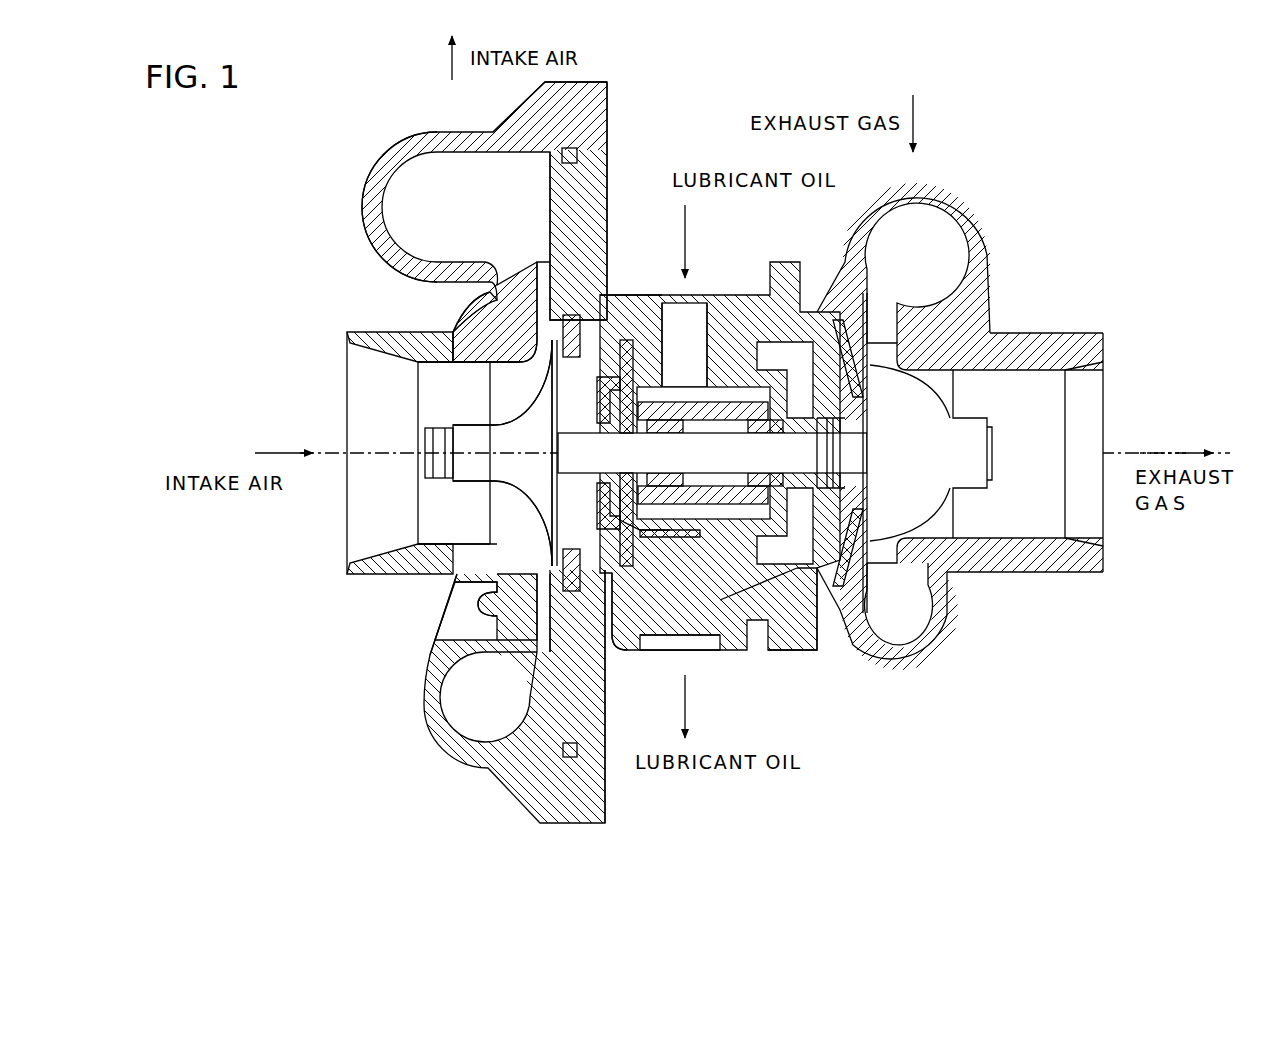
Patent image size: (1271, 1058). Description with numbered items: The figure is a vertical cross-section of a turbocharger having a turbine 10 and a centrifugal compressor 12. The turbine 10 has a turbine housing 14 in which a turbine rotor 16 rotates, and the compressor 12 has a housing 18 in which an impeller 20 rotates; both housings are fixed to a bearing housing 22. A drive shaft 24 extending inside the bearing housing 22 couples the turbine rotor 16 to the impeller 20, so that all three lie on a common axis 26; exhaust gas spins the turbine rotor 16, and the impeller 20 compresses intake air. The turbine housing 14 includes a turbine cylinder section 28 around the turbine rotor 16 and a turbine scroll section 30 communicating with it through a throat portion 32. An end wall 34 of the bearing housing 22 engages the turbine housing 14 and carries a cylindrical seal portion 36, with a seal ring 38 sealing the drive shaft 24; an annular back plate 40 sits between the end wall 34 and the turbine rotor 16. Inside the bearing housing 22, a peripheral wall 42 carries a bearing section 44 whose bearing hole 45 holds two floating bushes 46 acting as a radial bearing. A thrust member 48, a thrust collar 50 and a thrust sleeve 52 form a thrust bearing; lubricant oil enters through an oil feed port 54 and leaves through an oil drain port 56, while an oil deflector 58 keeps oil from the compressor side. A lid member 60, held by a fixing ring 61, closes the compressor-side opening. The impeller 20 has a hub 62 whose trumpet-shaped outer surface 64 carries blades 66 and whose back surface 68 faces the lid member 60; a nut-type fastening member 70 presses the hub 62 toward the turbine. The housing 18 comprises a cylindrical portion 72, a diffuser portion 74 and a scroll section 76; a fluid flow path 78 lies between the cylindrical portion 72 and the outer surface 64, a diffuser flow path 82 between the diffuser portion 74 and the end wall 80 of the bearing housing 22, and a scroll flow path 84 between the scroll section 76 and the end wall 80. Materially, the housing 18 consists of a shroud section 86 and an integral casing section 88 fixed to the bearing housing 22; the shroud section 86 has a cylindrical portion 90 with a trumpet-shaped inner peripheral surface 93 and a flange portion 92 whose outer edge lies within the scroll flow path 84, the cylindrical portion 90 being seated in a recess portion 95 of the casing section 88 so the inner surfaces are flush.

The turbine 10 is at (1086, 152).
The compressor 12 is at (479, 420).
The turbine housing 14 is at (986, 401).
The turbine rotor 16 is at (983, 420).
The housing 18 is at (372, 160).
The impeller 20 is at (429, 456).
The bearing housing 22 is at (720, 462).
The drive shaft 24 is at (723, 473).
The axis 26 is at (1093, 453).
The turbine cylinder section 28 is at (1030, 333).
The turbine scroll section 30 is at (920, 183).
The throat portion 32 is at (883, 333).
The end wall 34 is at (813, 595).
The seal portion 36 is at (950, 573).
The seal ring 38 is at (847, 472).
The back plate 40 is at (855, 340).
The peripheral wall 42 is at (633, 295).
The bearing section 44 is at (670, 540).
The bearing hole 45 is at (697, 538).
The floating bushes 46 is at (757, 402).
The thrust member 48 is at (670, 420).
The thrust collar 50 is at (623, 516).
The thrust sleeve 52 is at (547, 462).
The oil feed port 54 is at (698, 303).
The oil drain port 56 is at (698, 650).
The oil deflector 58 is at (663, 637).
The lid member 60 is at (585, 353).
The fixing ring 61 is at (612, 665).
The hub 62 is at (470, 470).
The outer surface 64 is at (548, 400).
The blades 66 is at (477, 507).
The back surface 68 is at (563, 372).
The fastening member 70 is at (430, 475).
The cylindrical portion 72 is at (347, 332).
The diffuser portion 74 is at (500, 330).
The scroll section 76 is at (372, 205).
The fluid flow path 78 is at (473, 547).
The end wall 80 is at (608, 150).
The diffuser flow path 82 is at (543, 270).
The scroll flow path 84 is at (443, 190).
The shroud section 86 is at (480, 603).
The casing section 88 is at (437, 730).
The cylindrical portion 90 is at (473, 583).
The flange portion 92 is at (535, 645).
The inner peripheral surface 93 is at (445, 352).
The recess portion 95 is at (457, 573).